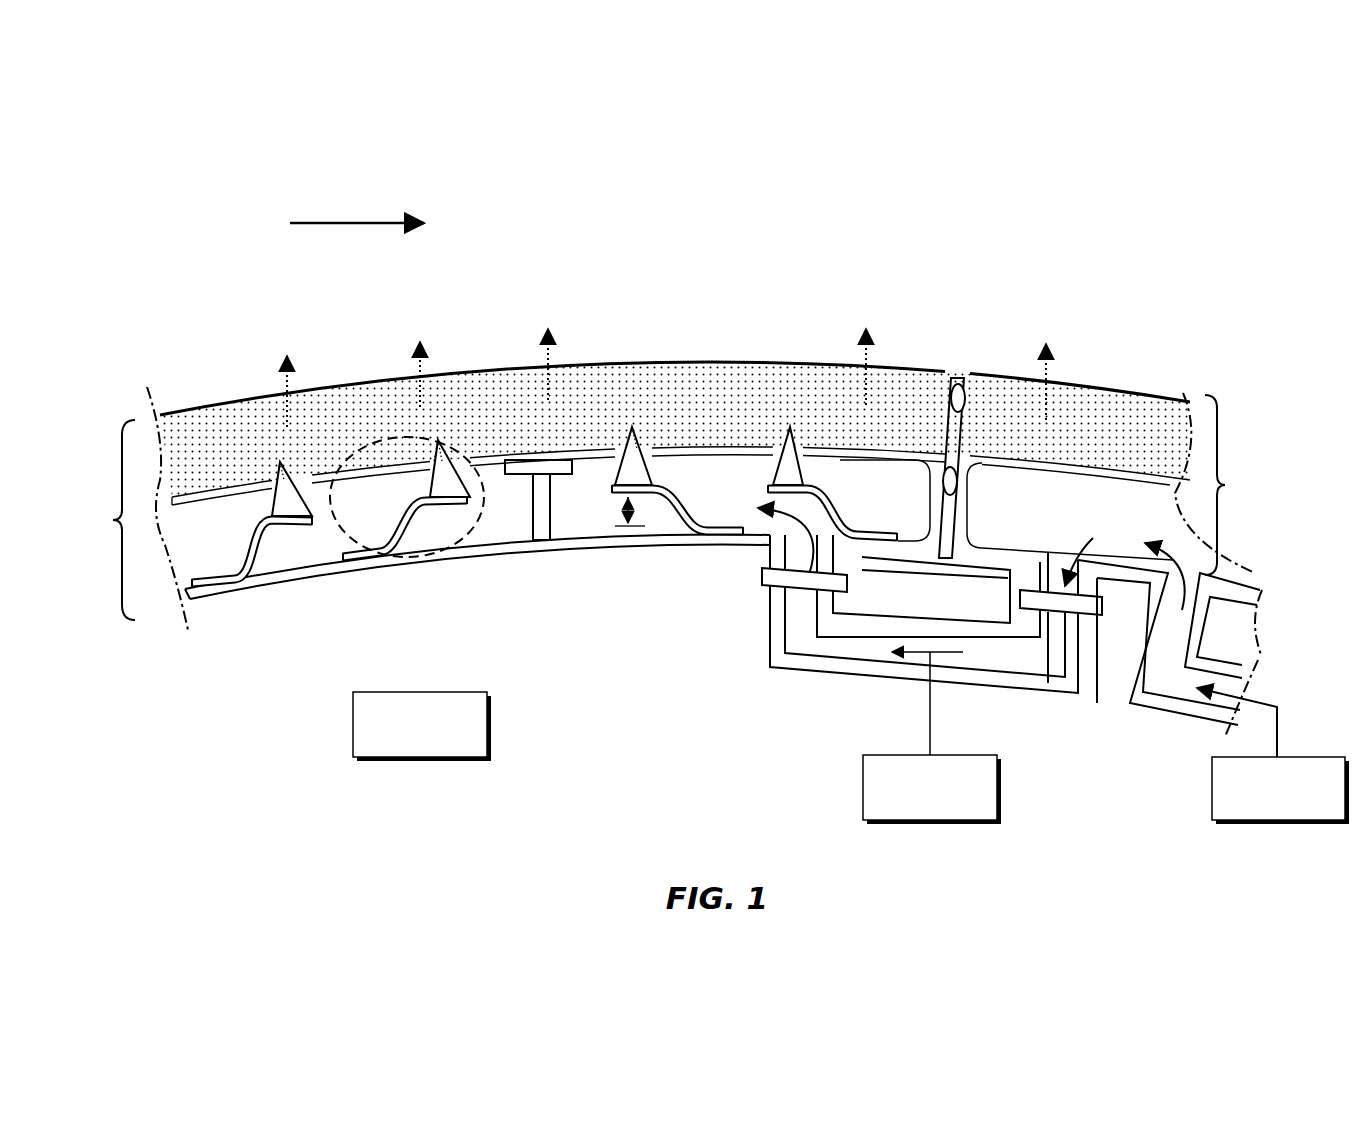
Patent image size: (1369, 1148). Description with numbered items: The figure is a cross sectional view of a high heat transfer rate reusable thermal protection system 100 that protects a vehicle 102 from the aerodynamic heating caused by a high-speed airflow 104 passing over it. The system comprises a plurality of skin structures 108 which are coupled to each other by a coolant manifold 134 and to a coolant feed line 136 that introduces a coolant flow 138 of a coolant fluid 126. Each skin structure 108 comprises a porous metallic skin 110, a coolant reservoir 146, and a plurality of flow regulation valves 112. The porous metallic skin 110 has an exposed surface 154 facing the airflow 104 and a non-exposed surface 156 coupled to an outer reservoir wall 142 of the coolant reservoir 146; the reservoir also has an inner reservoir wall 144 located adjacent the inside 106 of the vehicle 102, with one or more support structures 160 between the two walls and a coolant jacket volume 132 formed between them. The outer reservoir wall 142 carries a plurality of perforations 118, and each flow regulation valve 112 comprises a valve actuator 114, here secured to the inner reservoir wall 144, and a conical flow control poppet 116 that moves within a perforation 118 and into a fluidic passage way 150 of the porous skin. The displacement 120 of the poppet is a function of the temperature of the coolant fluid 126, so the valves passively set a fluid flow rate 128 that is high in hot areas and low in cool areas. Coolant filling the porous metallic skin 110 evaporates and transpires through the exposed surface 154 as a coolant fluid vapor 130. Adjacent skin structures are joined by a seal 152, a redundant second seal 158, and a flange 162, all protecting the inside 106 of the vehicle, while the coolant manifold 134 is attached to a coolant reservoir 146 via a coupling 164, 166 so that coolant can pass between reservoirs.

The high heat transfer rate reusable thermal protection system 100 is at (1030, 208).
The vehicle 102 is at (1258, 560).
The airflow 104 is at (298, 223).
The inside of the vehicle 106 is at (353, 745).
The skin structure 108 is at (662, 507).
The porous metallic skin 110 is at (496, 402).
The flow regulation valve 112 is at (330, 527).
The valve actuator 114 is at (395, 550).
The conical flow control poppet 116 is at (630, 428).
The perforation 118 is at (478, 500).
The displacement 120 is at (630, 512).
The coolant fluid 126 is at (1212, 812).
The fluid flow rate 128 is at (863, 812).
The coolant fluid vapor 130 is at (546, 331).
The coolant jacket volume 132 is at (552, 512).
The coolant manifold 134 is at (803, 643).
The coolant feed line 136 is at (1282, 732).
The coolant flow 138 is at (840, 540).
The outer reservoir wall 142 is at (180, 508).
The inner reservoir wall 144 is at (193, 600).
The coolant reservoir 146 is at (620, 570).
The fluidic passage way 150 is at (280, 463).
The seal 152 is at (957, 372).
The exposed surface 154 is at (312, 392).
The non-exposed surface 156 is at (328, 468).
The second seal 158 is at (950, 493).
The support structure 160 is at (602, 558).
The flange 162 is at (988, 562).
The coupling 164 is at (803, 583).
The coupling 166 is at (1060, 600).